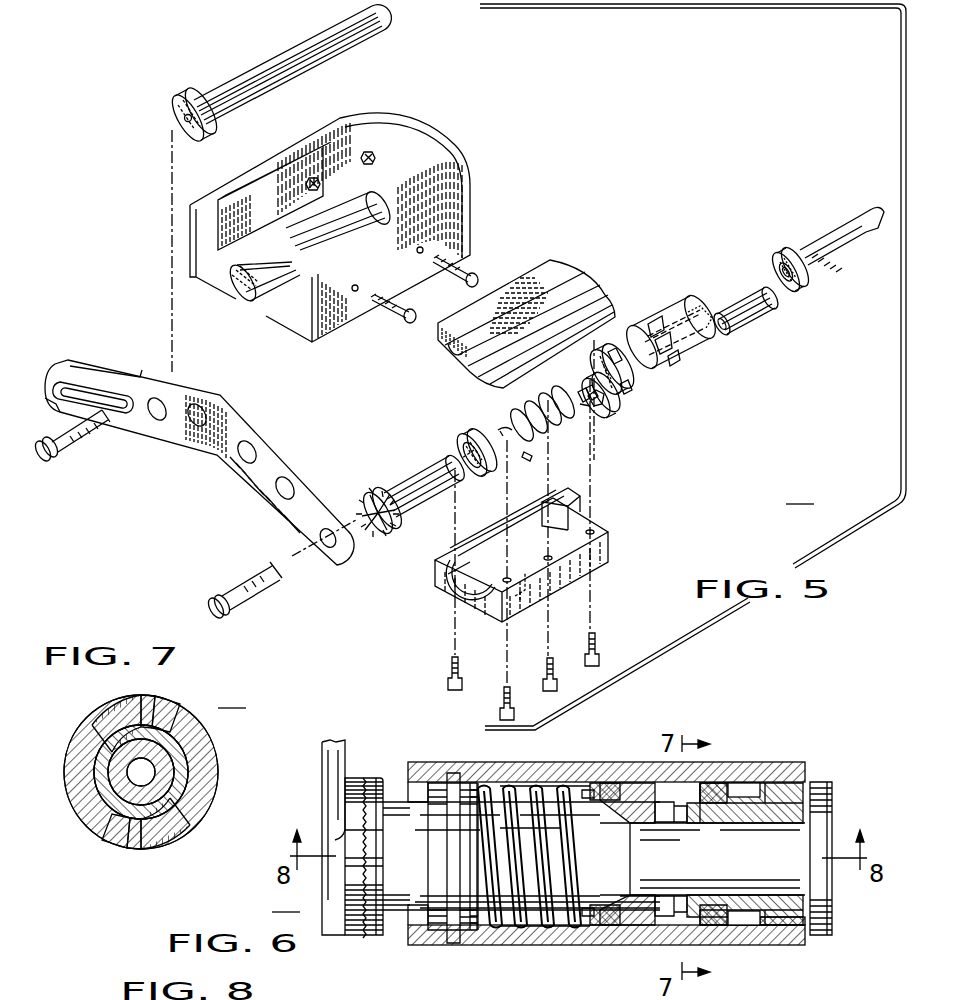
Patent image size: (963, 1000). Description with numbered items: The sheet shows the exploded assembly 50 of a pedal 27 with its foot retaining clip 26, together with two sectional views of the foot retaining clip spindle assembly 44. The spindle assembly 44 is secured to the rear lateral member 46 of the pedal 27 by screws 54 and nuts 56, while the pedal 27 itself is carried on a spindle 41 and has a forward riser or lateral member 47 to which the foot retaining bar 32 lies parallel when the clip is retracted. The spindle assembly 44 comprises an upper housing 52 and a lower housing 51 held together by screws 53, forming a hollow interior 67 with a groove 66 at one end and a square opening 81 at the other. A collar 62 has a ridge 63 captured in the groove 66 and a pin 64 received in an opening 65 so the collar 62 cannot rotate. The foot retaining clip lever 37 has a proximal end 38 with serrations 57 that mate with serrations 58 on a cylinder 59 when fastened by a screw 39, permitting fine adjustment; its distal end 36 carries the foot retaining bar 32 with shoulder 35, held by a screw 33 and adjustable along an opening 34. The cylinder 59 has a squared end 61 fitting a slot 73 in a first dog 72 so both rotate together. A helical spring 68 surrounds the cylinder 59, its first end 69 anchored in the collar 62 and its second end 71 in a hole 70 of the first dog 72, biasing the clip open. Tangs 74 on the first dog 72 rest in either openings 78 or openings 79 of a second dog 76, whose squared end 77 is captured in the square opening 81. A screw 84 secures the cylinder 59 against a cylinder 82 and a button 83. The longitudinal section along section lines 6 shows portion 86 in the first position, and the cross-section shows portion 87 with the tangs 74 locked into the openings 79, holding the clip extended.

In FIG. 5, the section lines 6— 6 is at (455, 453).
In FIG. 5, the foot retaining clip 26 is at (374, 598).
In FIG. 5, the pedal 27 is at (468, 178).
In FIG. 5, the foot retaining bar 32 is at (270, 55).
In FIG. 5, the screw 33 is at (60, 458).
In FIG. 5, the opening 34 is at (100, 380).
In FIG. 5, the shoulder 35 is at (190, 92).
In FIG. 5, the distal end 36 is at (107, 494).
In FIG. 5, the foot retaining clip lever 37 is at (228, 388).
In FIG. 5, the proximal end 38 is at (322, 572).
In FIG. 6, the proximal end 38 is at (366, 748).
In FIG. 5, the screw 39 is at (226, 620).
In FIG. 5, the spindle 41 is at (250, 295).
In FIG. 5, the foot retaining clip spindle assembly 44 is at (542, 190).
In FIG. 5, the rear lateral member 46 is at (372, 302).
In FIG. 5, the forward riser or lateral member 47 is at (285, 150).
In FIG. 5, the assembly 50 is at (800, 492).
In FIG. 5, the lower housing 51 is at (612, 560).
In FIG. 6, the lower housing 51 is at (778, 950).
In FIG. 5, the upper housing 52 is at (585, 275).
In FIG. 6, the upper housing 52 is at (790, 772).
In FIG. 5, the screws 53 is at (500, 700).
In FIG. 5, the screws 54 is at (460, 285).
In FIG. 5, the nuts 56 is at (370, 150).
In FIG. 5, the serrations 57 is at (370, 545).
In FIG. 6, the serrations 57 is at (360, 930).
In FIG. 5, the serrations 58 is at (376, 495).
In FIG. 6, the serrations 58 is at (372, 935).
In FIG. 5, the cylinder 59 is at (435, 500).
In FIG. 6, the cylinder 59 is at (540, 935).
In FIG. 5, the squared end 61 is at (430, 468).
In FIG. 6, the squared end 61 is at (612, 865).
In FIG. 5, the collar 62 is at (470, 480).
In FIG. 6, the collar 62 is at (480, 935).
In FIG. 5, the ridge 63 is at (452, 435).
In FIG. 6, the ridge 63 is at (450, 935).
In FIG. 5, the pin 64 is at (540, 465).
In FIG. 5, the opening 65 is at (478, 470).
In FIG. 5, the groove 66 is at (458, 600).
In FIG. 5, the hollow interior 67 is at (455, 380).
In FIG. 5, the helical spring 68 is at (550, 428).
In FIG. 6, the helical spring 68 is at (580, 930).
In FIG. 5, the first end 69 is at (496, 420).
In FIG. 5, the hole 70 is at (605, 372).
In FIG. 6, the hole 70 is at (606, 786).
In FIG. 5, the second end 71 is at (582, 390).
In FIG. 6, the second end 71 is at (580, 790).
In FIG. 5, the first dog 72 is at (628, 395).
In FIG. 5, the slot 73 is at (603, 398).
In FIG. 6, the slot 73 is at (627, 856).
In FIG. 5, the tangs 74 is at (632, 380).
In FIG. 7, the tangs 74 is at (140, 772).
In FIG. 6, the tangs 74 is at (630, 785).
In FIG. 5, the second dog 76 is at (710, 352).
In FIG. 7, the second dog 76 is at (98, 788).
In FIG. 6, the second dog 76 is at (790, 790).
In FIG. 5, the squared end 77 is at (685, 325).
In FIG. 5, the openings 78 is at (662, 316).
In FIG. 7, the openings 78 is at (108, 712).
In FIG. 6, the openings 78 is at (720, 785).
In FIG. 5, the openings 79 is at (680, 365).
In FIG. 7, the openings 79 is at (150, 705).
In FIG. 6, the openings 79 is at (700, 782).
In FIG. 5, the square opening 81 is at (595, 486).
In FIG. 5, the cylinder 82 is at (752, 316).
In FIG. 7, the cylinder 82 is at (200, 752).
In FIG. 6, the cylinder 82 is at (760, 864).
In FIG. 5, the button 83 is at (800, 288).
In FIG. 6, the button 83 is at (830, 935).
In FIG. 5, the screw 84 is at (848, 255).
In FIG. 7, the screw 84 is at (214, 778).
In FIG. 6, the portion 86 is at (286, 900).
In FIG. 7, the portion 87 is at (232, 696).